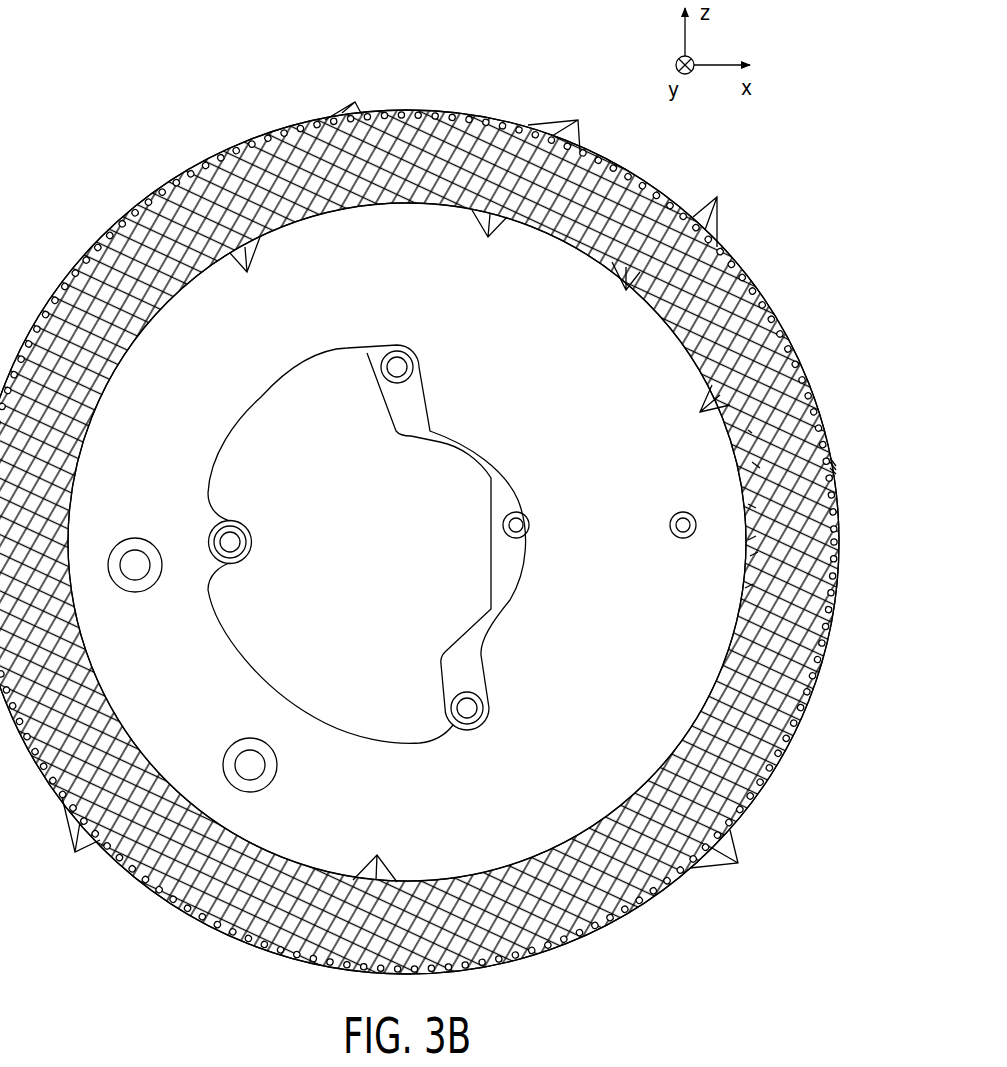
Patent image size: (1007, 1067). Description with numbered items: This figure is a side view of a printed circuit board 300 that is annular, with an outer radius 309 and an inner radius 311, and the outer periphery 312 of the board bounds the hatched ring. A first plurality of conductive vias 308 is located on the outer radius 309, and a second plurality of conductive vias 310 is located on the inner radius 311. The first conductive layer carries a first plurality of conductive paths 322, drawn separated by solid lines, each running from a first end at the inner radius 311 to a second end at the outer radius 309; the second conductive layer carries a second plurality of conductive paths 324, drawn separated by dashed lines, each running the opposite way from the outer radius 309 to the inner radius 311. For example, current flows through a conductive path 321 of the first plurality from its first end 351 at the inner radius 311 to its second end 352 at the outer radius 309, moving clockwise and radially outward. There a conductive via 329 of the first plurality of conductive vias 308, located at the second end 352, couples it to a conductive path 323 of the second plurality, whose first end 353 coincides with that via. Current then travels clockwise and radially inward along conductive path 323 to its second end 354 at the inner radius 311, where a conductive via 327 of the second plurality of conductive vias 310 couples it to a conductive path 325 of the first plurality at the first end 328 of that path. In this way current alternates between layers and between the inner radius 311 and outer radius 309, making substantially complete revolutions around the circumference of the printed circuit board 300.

The printed circuit board 300 is at (445, 494).
The first plurality of conductive vias 308 is at (407, 493).
The outer radius 309 is at (419, 538).
The second plurality of conductive vias 310 is at (368, 546).
The inner radius 311 is at (172, 328).
The outer periphery 312 is at (92, 243).
The conductive path 321 is at (754, 463).
The first plurality of conductive paths 322 is at (537, 158).
The conductive path 323 is at (748, 505).
The second plurality of conductive paths 324 is at (671, 354).
The conductive path 325 is at (745, 588).
The conductive via 327 is at (748, 540).
The first end 328 is at (750, 556).
The conductive via 329 is at (833, 464).
The first end 351 is at (735, 428).
The second end 352 is at (833, 462).
The first end 353 is at (835, 468).
The second end 354 is at (751, 535).